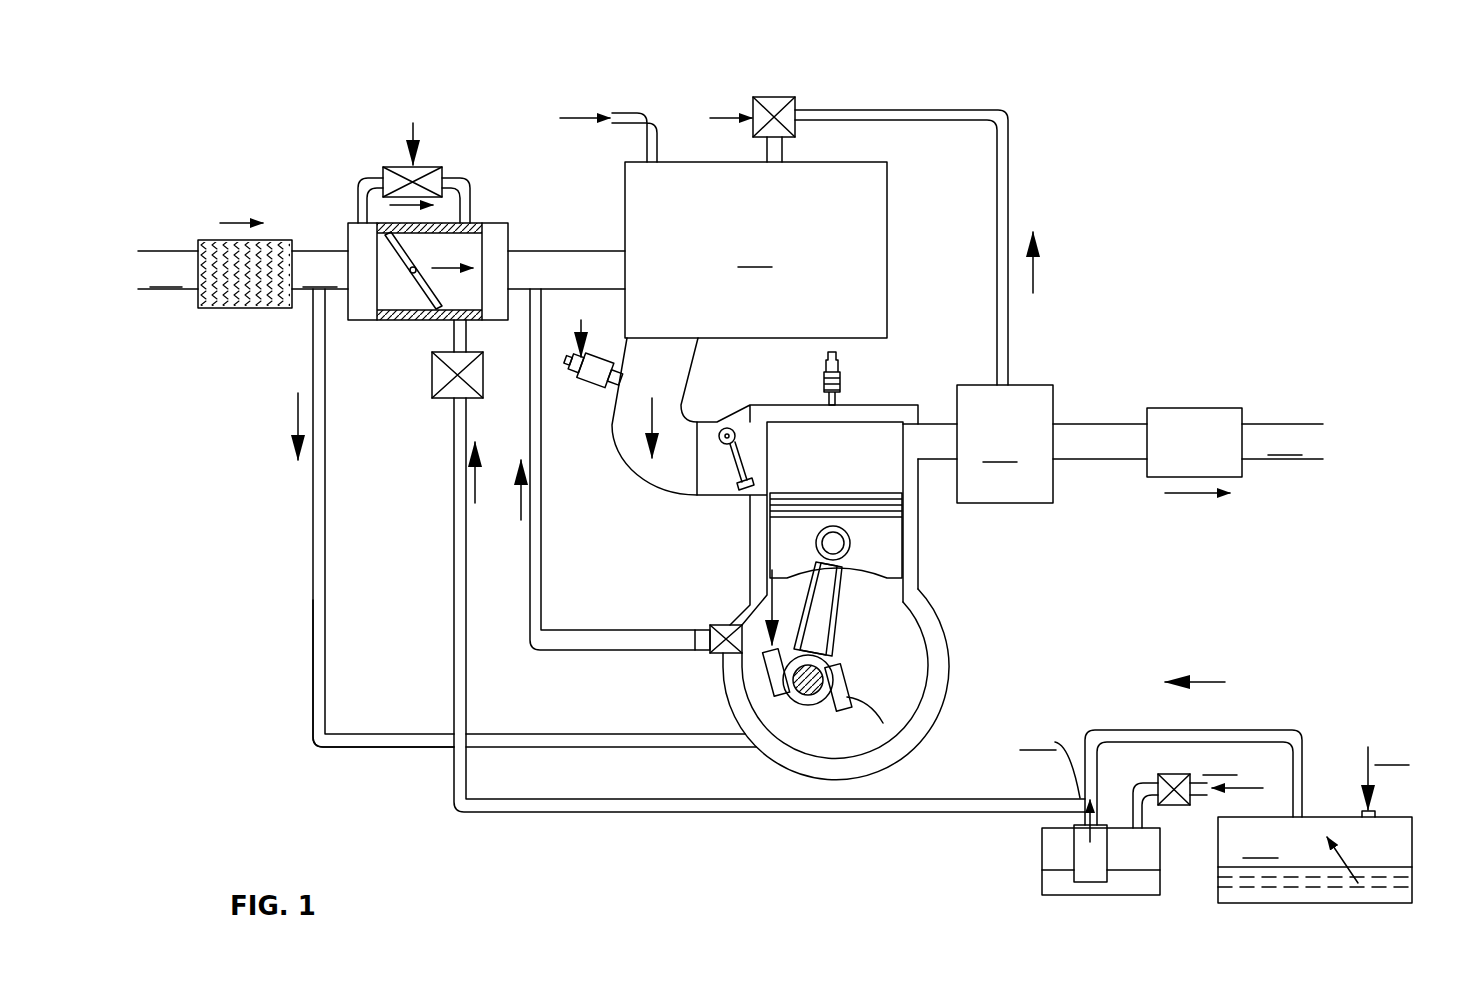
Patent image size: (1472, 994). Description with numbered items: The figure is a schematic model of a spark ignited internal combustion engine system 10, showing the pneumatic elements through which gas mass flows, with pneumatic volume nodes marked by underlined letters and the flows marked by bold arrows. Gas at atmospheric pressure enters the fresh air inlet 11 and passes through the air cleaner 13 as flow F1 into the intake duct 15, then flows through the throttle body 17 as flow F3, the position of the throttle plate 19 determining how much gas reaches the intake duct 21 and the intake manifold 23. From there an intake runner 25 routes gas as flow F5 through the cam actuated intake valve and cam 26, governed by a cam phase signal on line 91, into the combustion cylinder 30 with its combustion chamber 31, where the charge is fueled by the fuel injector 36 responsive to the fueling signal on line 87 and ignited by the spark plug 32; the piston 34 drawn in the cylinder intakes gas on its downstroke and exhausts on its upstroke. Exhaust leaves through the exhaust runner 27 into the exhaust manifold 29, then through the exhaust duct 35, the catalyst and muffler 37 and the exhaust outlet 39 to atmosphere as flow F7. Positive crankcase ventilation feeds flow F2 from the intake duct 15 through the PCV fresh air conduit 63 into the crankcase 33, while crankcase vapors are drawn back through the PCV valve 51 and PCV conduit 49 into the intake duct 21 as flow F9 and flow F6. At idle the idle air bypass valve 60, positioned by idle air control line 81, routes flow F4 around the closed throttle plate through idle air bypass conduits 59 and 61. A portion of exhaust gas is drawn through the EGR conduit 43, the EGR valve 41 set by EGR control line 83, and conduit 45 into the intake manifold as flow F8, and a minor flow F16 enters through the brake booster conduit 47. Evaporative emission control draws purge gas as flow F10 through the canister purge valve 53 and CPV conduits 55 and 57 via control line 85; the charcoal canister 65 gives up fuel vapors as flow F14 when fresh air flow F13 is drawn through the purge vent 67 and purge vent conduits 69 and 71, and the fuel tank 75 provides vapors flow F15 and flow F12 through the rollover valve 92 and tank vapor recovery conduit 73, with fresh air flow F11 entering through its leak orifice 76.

The internal combustion engine system 10 is at (1160, 166).
The fresh air inlet 11 is at (172, 249).
The air cleaner 13 is at (240, 310).
The intake duct 15 is at (312, 250).
The throttle body 17 is at (360, 322).
The throttle plate 19 is at (413, 309).
The intake duct 21 is at (565, 250).
The intake manifold 23 is at (623, 195).
The intake runner 25 is at (681, 376).
The intake valve and cam 26 is at (720, 422).
The exhaust runner 27 is at (937, 462).
The exhaust manifold 29 is at (1045, 505).
The combustion cylinder 30 is at (962, 620).
The combustion chamber 31 is at (875, 430).
The spark plug 32 is at (840, 372).
The crankcase 33 is at (930, 683).
The piston 34 is at (880, 557).
The exhaust duct 35 is at (1085, 422).
The fuel injector 36 is at (591, 392).
The catalyst and muffler 37 is at (1186, 407).
The exhaust outlet 39 is at (1270, 423).
The EGR valve 41 is at (785, 96).
The EGR conduit 43 is at (873, 108).
The EGR conduit 45 is at (783, 152).
The brake booster conduit 47 is at (648, 110).
The PCV conduit 49 is at (544, 456).
The PCV valve 51 is at (702, 625).
The canister purge valve 53 is at (484, 388).
The CPV conduit 55 is at (453, 522).
The CPV conduit 57 is at (432, 362).
The idle air bypass conduit 59 is at (357, 200).
The idle air bypass valve 60 is at (428, 167).
The idle air bypass conduit 61 is at (470, 181).
The PCV fresh air conduit 63 is at (312, 532).
The charcoal canister 65 is at (1042, 878).
The canister purge vent 67 is at (1175, 806).
The purge vent conduit 69 is at (1133, 806).
The canister purge vent conduit 71 is at (1197, 776).
The tank vapor recovery conduit 73 is at (1240, 730).
The fuel tank 75 is at (1330, 817).
The leak orifice 76 is at (1376, 813).
The idle air control line 81 is at (417, 125).
The EGR control line 83 is at (723, 112).
The control valve signal 85 is at (430, 377).
The fueling signal line 87 is at (584, 325).
The cam timing signal line 91 is at (725, 500).
The rollover valve 92 is at (1302, 782).
The gas mass flow F1 is at (235, 221).
The gas mass flow F2 is at (295, 425).
The gas mass flow F3 is at (455, 262).
The gas mass flow F4 is at (400, 196).
The gas mass flow F5 is at (645, 425).
The crankcase flow F6 is at (757, 613).
The exhaust flow F7 is at (1190, 496).
The gas mass flow F8 is at (1037, 280).
The gas mass flow F9 is at (526, 525).
The gas mass flow F10 is at (480, 490).
The gas mass flow F11 is at (1364, 756).
The gas mass flow F12 is at (1215, 680).
The gas mass flow F13 is at (1245, 789).
The gas mass flow F14 is at (1085, 835).
The gas mass flow F15 is at (1350, 856).
The gas mass flow F16 is at (580, 113).